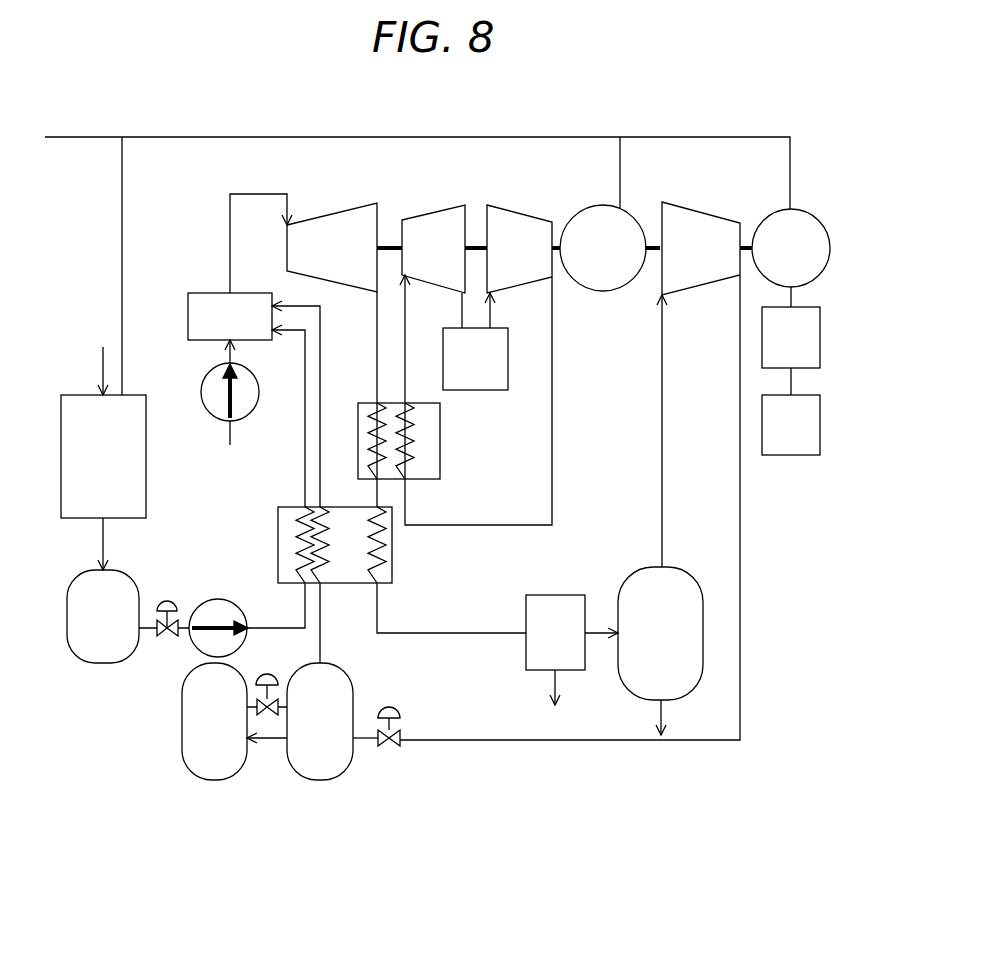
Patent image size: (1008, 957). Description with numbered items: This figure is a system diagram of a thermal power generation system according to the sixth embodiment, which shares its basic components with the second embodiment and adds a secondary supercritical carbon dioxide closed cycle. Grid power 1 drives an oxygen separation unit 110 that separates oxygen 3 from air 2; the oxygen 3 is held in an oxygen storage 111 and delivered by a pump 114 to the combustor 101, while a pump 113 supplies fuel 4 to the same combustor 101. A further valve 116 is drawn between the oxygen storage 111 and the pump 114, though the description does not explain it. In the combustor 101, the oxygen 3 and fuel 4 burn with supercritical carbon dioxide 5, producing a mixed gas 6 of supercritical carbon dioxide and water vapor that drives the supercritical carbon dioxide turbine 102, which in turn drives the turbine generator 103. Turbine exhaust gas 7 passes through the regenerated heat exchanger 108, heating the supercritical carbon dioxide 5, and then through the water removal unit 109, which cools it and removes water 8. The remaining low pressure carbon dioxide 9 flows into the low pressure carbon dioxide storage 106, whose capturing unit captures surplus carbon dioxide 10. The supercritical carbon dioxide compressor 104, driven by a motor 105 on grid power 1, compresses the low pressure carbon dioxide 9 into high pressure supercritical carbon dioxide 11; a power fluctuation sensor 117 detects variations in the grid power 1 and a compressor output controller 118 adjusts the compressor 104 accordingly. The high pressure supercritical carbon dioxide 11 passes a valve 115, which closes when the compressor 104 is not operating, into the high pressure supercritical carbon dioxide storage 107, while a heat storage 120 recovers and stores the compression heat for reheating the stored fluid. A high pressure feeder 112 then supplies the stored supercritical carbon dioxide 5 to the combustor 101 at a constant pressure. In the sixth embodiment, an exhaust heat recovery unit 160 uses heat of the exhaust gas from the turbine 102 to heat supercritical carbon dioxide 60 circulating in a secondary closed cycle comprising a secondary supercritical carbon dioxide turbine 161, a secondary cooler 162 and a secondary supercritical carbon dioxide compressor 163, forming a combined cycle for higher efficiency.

The grid power 1 is at (200, 137).
The air 2 is at (100, 366).
The oxygen 3 is at (100, 548).
The fuel 4 is at (228, 434).
The supercritical carbon dioxide 5 is at (300, 306).
The mixed gas 6 is at (238, 194).
The turbine exhaust gas 7 is at (375, 328).
The water 8 is at (553, 685).
The low pressure carbon dioxide 9 is at (664, 395).
The surplus carbon dioxide 10 is at (660, 712).
The high pressure supercritical carbon dioxide 11 is at (742, 597).
The supercritical carbon dioxide 60 is at (553, 393).
The combustor 101 is at (212, 293).
The supercritical CO2 turbine 102 is at (338, 210).
The supercritical CO2 turbine generator 103 is at (590, 208).
The supercritical CO2 compressor 104 is at (697, 208).
The motor 105 is at (818, 215).
The low pressure CO2 storage 106 is at (672, 567).
The high pressure supercritical CO2 storage 107 is at (183, 757).
The regenerated heat exchanger 108 is at (394, 562).
The water removal unit 109 is at (555, 595).
The oxygen separation unit 110 is at (126, 395).
The oxygen storage 111 is at (105, 665).
The high pressure supercritical CO2 feeder 112 is at (270, 674).
The pump 113 is at (203, 390).
The pump 114 is at (220, 600).
The valve 115 is at (391, 706).
The control valve 116 is at (163, 600).
The power fluctuation sensor 117 is at (822, 420).
The supercritical CO2 compressor output controller 118 is at (822, 335).
The heat storage 120 is at (356, 757).
The exhaust heat recovery unit 160 is at (442, 455).
The secondary supercritical CO2 turbine 161 is at (432, 212).
The secondary cooler 162 is at (470, 392).
The secondary supercritical CO2 compressor 163 is at (520, 212).